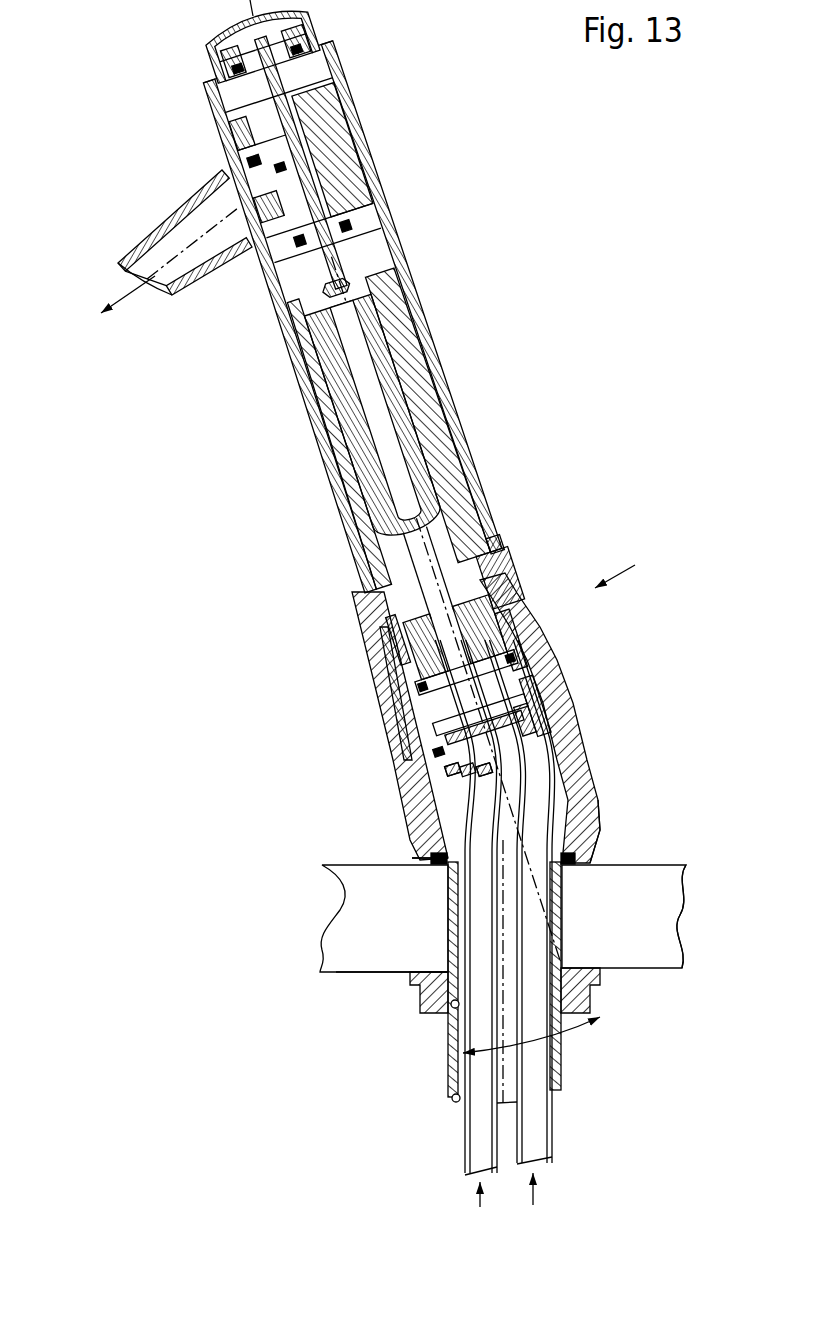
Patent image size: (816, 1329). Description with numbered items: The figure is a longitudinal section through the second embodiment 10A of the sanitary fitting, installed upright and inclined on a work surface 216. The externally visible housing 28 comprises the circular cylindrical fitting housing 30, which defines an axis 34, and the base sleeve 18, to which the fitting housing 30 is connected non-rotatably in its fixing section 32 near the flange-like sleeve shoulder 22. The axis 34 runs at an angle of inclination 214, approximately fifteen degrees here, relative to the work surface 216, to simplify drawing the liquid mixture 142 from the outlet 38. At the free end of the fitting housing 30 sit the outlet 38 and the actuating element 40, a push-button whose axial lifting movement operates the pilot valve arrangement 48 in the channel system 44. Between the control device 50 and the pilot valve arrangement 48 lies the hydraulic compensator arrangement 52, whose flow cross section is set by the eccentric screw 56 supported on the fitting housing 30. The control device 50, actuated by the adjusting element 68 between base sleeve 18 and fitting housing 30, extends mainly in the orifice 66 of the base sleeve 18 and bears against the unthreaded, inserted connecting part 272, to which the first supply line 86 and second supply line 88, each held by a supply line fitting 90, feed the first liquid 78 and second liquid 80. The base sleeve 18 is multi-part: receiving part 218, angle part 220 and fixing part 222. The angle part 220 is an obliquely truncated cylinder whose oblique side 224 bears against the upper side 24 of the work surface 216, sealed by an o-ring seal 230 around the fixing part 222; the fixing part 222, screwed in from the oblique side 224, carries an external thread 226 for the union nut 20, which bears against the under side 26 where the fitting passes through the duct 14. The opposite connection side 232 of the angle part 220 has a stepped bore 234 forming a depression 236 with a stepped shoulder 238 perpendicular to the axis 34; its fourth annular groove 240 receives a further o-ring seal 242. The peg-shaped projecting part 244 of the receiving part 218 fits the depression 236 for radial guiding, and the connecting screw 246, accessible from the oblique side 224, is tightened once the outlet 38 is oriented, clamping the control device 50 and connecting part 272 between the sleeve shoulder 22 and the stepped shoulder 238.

The actuating element 40 is at (212, 46).
The outlet 38 is at (146, 240).
The liquid mixture 142 is at (130, 311).
The pilot valve arrangement 48 is at (367, 176).
The channel system 44 is at (350, 267).
The fitting housing 30 is at (413, 297).
The housing 28 is at (427, 327).
The second embodiment of the sanitary fitting 10A is at (517, 405).
The eccentric screw 56 is at (338, 296).
The axis 34 is at (314, 373).
The compensator arrangement 52 is at (337, 425).
The fixing section 32 is at (498, 530).
The adjusting element 68 is at (507, 560).
The sleeve shoulder 22 is at (517, 603).
The base sleeve 18 is at (633, 563).
The orifice 66 is at (547, 643).
The connecting part 272 is at (578, 706).
The connection side 232 is at (592, 700).
The supply line fitting 90 is at (563, 730).
The connecting screw 246 is at (560, 747).
The upper side 24 is at (652, 860).
The under side 26 is at (668, 966).
The control device 50 is at (378, 678).
The receiving part 218 is at (370, 697).
The peg-shaped projecting part 244 is at (397, 780).
The stepped bore 234 is at (420, 790).
The depression 236 is at (453, 769).
The stepped shoulder 238 is at (435, 800).
The fourth annular groove 240 is at (440, 815).
The further o-ring seal 242 is at (484, 770).
The angle part 220 is at (430, 865).
The o-ring seal 230 is at (413, 878).
The work surface 216 is at (448, 910).
The duct 14 is at (362, 955).
The union nut 20 is at (450, 987).
The external thread 226 is at (450, 1007).
The fixing part 222 is at (455, 1098).
The first supply line 86 is at (463, 1158).
The second supply line 88 is at (550, 1143).
The first liquid 78 is at (482, 1219).
The second liquid 80 is at (537, 1209).
The angle of inclination 214 is at (541, 1045).
The oblique side 224 is at (597, 832).